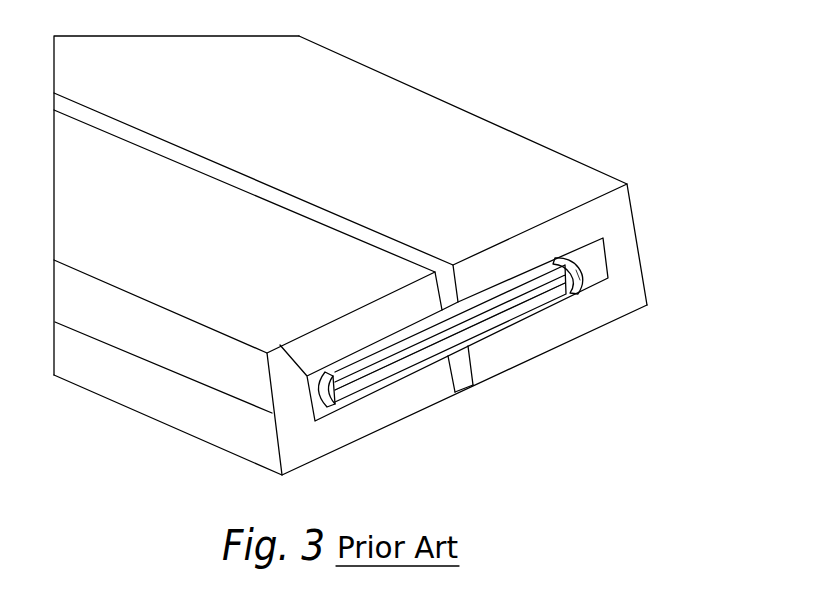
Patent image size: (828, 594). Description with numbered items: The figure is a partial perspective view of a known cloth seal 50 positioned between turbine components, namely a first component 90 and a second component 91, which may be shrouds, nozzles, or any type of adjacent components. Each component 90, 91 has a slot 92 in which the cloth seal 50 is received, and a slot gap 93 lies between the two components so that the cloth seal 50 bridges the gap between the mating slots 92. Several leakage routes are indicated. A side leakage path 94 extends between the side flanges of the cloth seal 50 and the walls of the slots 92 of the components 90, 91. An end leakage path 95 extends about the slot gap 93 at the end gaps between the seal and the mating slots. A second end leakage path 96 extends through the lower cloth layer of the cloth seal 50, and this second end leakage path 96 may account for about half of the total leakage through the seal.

The cloth seal 50 is at (539, 311).
The first component 90 is at (165, 431).
The second component 91 is at (463, 111).
The slot 92 is at (598, 271).
The slot gap 93 is at (462, 389).
The side leakage path 94 is at (589, 276).
The end leakage path 95 is at (474, 390).
The second end leakage path 96 is at (355, 402).